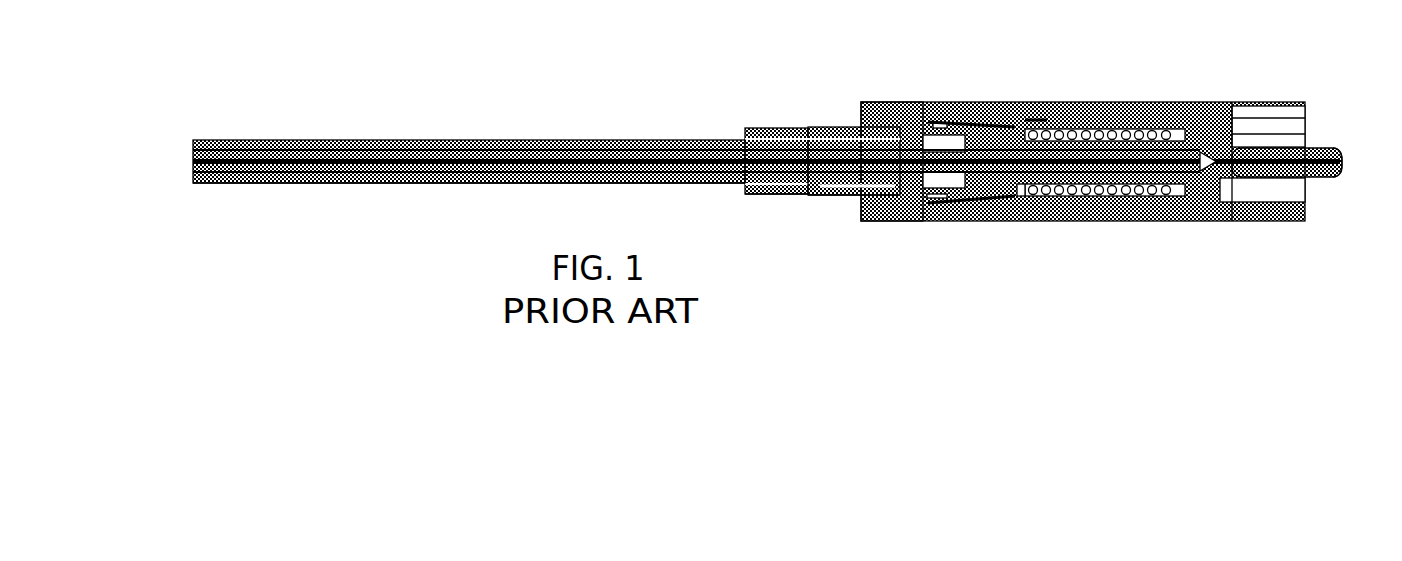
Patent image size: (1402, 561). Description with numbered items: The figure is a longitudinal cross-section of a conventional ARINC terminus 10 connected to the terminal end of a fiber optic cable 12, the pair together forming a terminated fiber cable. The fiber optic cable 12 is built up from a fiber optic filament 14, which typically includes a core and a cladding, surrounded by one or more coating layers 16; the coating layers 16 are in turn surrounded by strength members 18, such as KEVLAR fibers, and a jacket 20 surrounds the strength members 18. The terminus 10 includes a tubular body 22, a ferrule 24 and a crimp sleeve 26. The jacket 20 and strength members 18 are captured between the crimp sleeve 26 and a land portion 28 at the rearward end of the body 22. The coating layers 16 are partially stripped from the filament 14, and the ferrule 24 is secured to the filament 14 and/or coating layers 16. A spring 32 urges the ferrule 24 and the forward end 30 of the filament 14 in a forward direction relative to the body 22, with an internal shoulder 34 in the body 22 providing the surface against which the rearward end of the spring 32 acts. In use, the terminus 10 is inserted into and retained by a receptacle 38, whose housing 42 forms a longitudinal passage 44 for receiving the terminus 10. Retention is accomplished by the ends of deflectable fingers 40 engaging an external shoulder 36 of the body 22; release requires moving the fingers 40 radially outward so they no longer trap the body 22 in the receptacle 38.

The ARINC 801 terminus 10 is at (843, 116).
The fiber optic cable 12 is at (258, 139).
The fiber optic filament 14 is at (191, 161).
The coating layers 16 is at (191, 173).
The strength members 18 is at (191, 147).
The jacket 20 is at (211, 185).
The tubular body 22 is at (934, 124).
The ferrule 24 is at (1270, 180).
The crimp sleeve 26 is at (800, 128).
The land portion 28 is at (840, 188).
The end of the fiber optic filament 30 is at (1346, 165).
The spring 32 is at (1114, 197).
The internal shoulder 34 is at (1028, 193).
The external shoulder 36 is at (1010, 123).
The receptacle 38 is at (1172, 101).
The deflectable fingers 40 is at (984, 121).
The housing 42 is at (1125, 104).
The longitudinal passage 44 is at (858, 201).